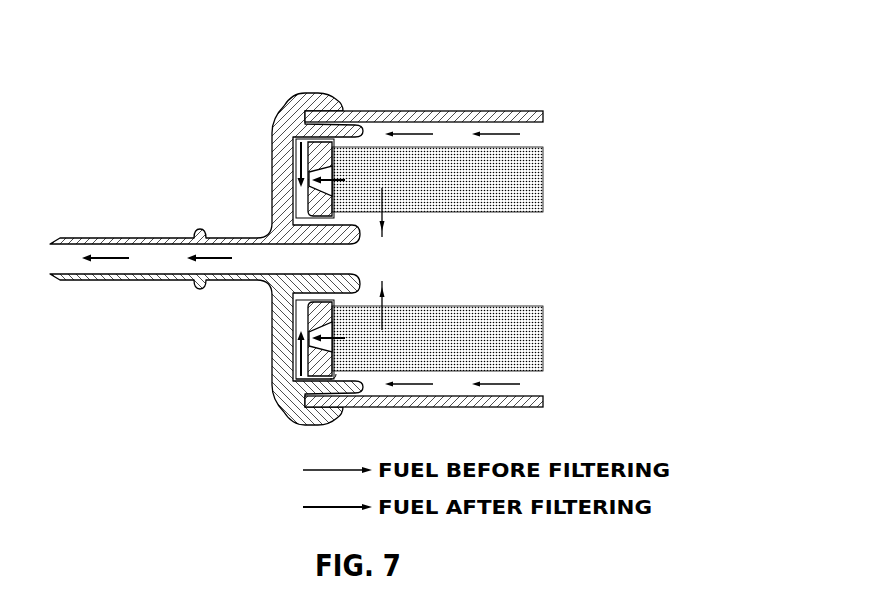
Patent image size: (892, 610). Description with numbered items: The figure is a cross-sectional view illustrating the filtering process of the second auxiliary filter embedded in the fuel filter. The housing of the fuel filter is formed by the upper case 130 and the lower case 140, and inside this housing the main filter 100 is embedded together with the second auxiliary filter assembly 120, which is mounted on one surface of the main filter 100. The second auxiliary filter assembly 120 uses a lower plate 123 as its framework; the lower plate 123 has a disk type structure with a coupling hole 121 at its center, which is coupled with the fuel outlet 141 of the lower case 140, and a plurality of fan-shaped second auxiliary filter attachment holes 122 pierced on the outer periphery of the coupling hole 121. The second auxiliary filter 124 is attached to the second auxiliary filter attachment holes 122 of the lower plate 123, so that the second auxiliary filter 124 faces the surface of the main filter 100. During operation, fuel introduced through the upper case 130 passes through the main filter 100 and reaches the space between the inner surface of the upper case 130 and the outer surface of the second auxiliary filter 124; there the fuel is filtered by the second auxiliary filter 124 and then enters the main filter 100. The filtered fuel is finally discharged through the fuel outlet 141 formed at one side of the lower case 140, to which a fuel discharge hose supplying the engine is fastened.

The main filter 100 is at (524, 138).
The second auxiliary filter assembly 120 is at (320, 126).
The coupling hole 121 is at (330, 223).
The second auxiliary filter attachment hole 122 is at (310, 368).
The lower plate 123 is at (318, 385).
The second auxiliary filter 124 is at (305, 193).
The upper case 130 is at (473, 111).
The lower case 140 is at (274, 112).
The fuel outlet 141 is at (252, 262).